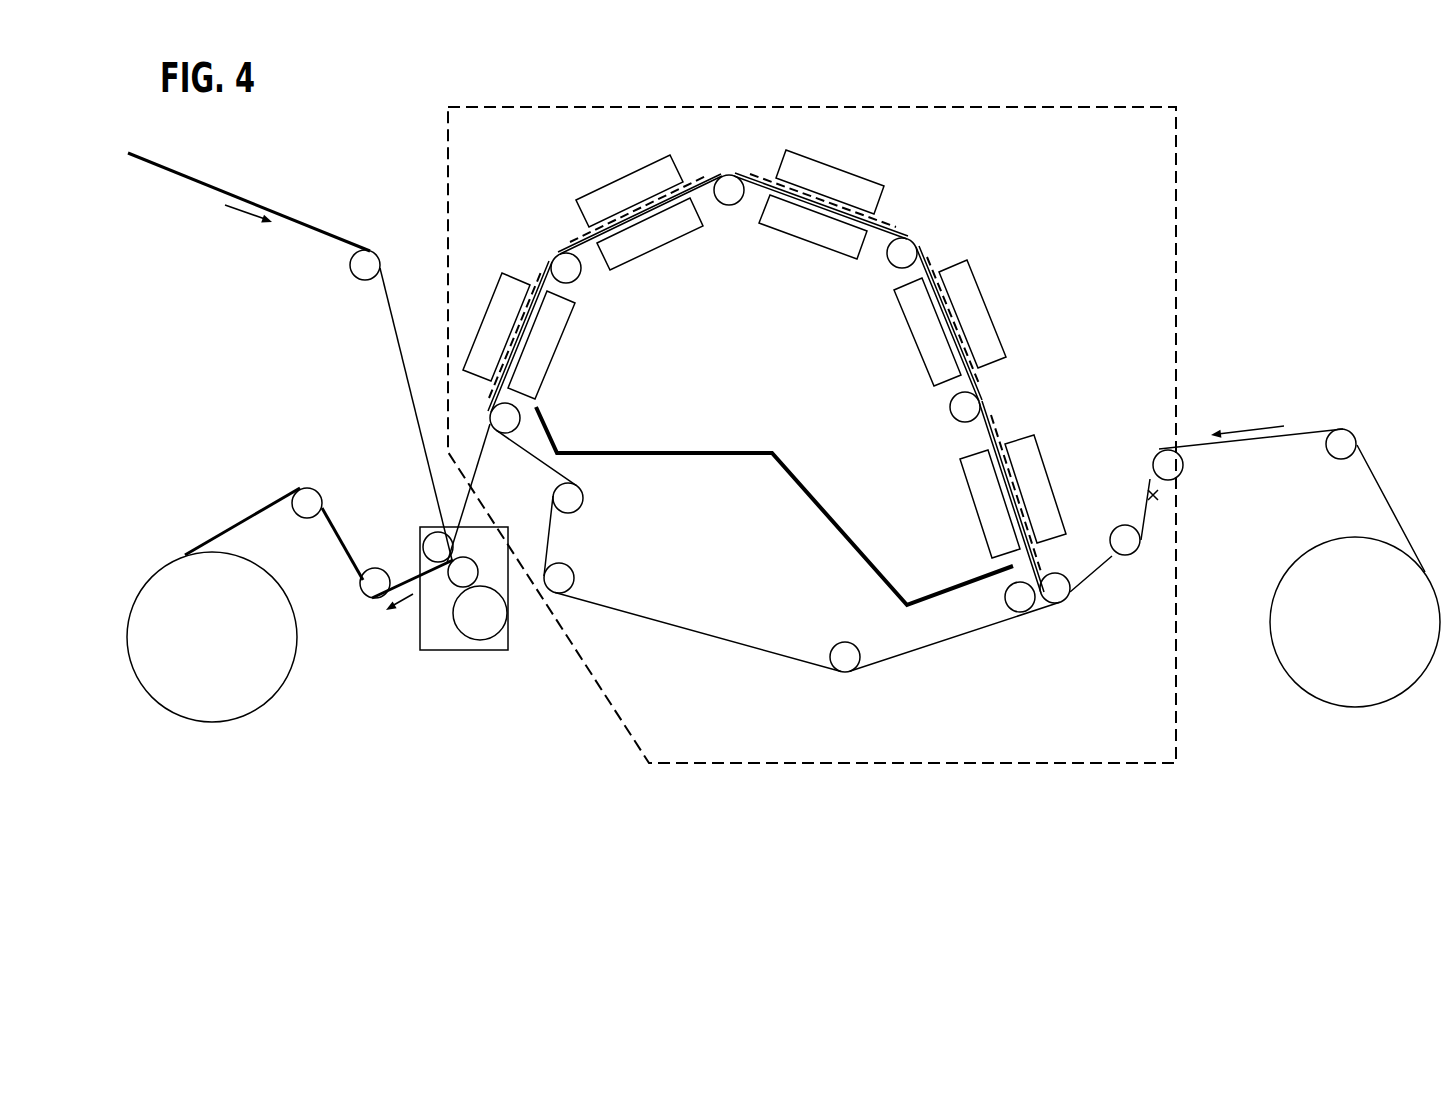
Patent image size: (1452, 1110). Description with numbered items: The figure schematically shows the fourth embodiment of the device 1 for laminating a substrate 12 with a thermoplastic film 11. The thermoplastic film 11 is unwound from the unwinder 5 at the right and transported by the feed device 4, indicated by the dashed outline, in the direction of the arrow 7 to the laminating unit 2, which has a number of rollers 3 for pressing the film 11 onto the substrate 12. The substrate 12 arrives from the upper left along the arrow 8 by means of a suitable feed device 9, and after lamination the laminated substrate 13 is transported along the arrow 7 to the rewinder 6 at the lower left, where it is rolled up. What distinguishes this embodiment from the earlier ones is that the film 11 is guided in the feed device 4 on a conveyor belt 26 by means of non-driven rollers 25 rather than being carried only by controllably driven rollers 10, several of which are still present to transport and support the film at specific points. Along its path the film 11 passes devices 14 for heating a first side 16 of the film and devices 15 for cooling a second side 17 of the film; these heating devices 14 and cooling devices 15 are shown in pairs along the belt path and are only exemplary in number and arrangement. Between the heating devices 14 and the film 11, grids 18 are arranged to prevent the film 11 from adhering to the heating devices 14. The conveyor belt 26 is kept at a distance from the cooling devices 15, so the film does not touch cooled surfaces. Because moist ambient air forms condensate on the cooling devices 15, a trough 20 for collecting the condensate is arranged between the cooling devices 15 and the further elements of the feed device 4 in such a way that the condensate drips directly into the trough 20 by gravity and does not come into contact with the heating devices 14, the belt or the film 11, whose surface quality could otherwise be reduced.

The device for laminating a substrate with a thermoplastic film 1 is at (385, 765).
The laminating unit 2 is at (480, 650).
The rollers 3 is at (424, 553).
The feed device 4 is at (1098, 765).
The unwinder 5 is at (1364, 685).
The rewinder 6 is at (220, 702).
The arrow 7 is at (404, 607).
The arrow 8 is at (243, 215).
The feed device 9 is at (333, 226).
The driven rollers 10 is at (433, 547).
The thermoplastic film 11 is at (1280, 438).
The substrate 12 is at (280, 210).
The laminated substrate 13 is at (258, 505).
The heating devices 14 is at (483, 308).
The cooling devices 15 is at (567, 350).
The first side 16 is at (1154, 495).
The second side 17 is at (1156, 496).
The grids 18 is at (528, 292).
The trough 20 is at (813, 505).
The non-driven rollers 25 is at (510, 420).
The conveyor belt 26 is at (934, 646).